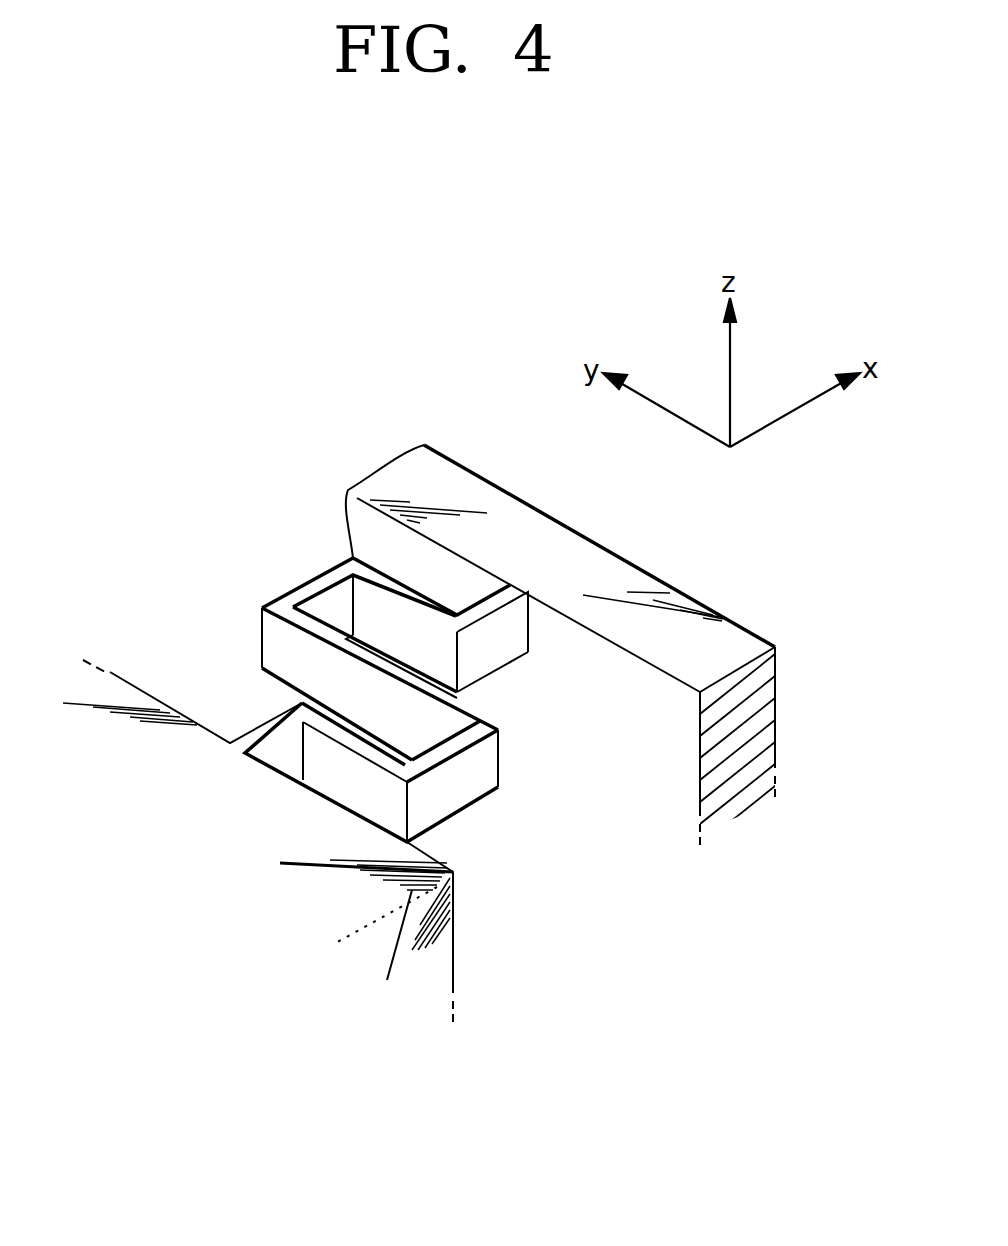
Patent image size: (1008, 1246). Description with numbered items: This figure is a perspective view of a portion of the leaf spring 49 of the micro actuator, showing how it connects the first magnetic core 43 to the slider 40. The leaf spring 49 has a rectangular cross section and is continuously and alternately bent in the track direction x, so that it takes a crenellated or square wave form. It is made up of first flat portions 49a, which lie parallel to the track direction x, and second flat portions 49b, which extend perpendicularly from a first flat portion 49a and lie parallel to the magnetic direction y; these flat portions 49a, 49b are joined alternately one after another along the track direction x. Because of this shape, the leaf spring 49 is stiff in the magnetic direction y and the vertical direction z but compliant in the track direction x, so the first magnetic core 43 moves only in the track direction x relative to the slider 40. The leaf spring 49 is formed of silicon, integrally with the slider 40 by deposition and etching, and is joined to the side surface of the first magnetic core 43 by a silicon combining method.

The slider 40 is at (488, 477).
The first magnetic core 43 is at (147, 692).
The leaf spring 49 is at (347, 696).
The first flat portion 49a is at (445, 812).
The second flat portion 49b is at (305, 643).